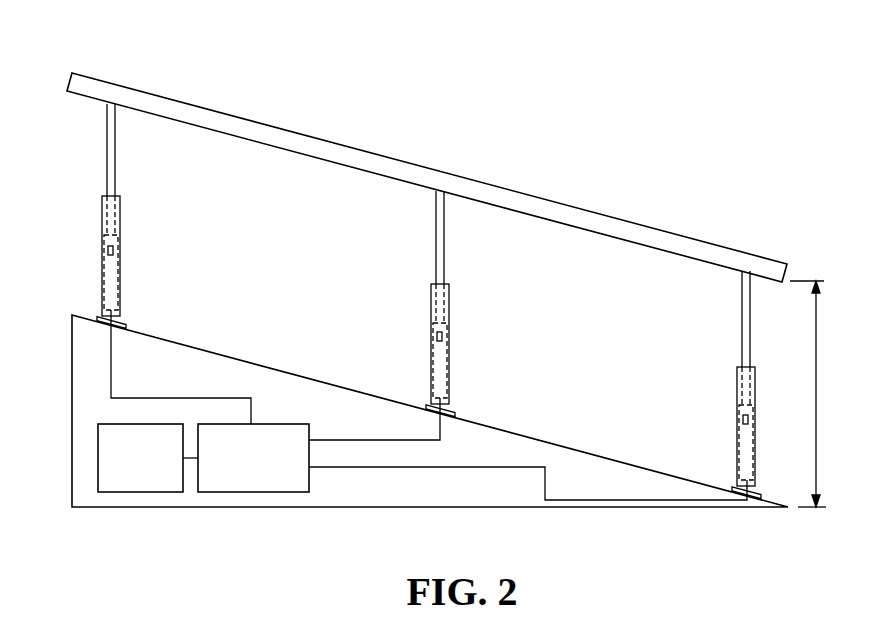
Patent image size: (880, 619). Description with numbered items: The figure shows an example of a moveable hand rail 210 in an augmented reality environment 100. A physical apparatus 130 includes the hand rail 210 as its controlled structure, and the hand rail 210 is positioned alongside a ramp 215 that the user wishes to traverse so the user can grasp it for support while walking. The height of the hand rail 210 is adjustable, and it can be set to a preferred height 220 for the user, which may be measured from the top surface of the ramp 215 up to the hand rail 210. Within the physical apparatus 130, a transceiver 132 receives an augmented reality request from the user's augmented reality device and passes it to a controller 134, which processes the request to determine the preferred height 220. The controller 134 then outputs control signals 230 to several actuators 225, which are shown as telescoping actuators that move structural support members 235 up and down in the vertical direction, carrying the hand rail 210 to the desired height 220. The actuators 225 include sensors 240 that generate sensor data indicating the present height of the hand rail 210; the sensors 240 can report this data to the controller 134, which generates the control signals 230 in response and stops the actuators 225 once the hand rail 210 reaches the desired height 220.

The augmented reality environment 100 is at (478, 88).
The physical apparatus 130 is at (573, 158).
The transceiver 132 is at (148, 458).
The controller 134 is at (253, 458).
The hand rail 210 is at (248, 130).
The ramp 215 is at (205, 348).
The preferred height 220 is at (810, 394).
The actuators 225 is at (113, 280).
The control signals 230 is at (133, 395).
The structural support members 235 is at (108, 170).
The sensors 240 is at (108, 250).